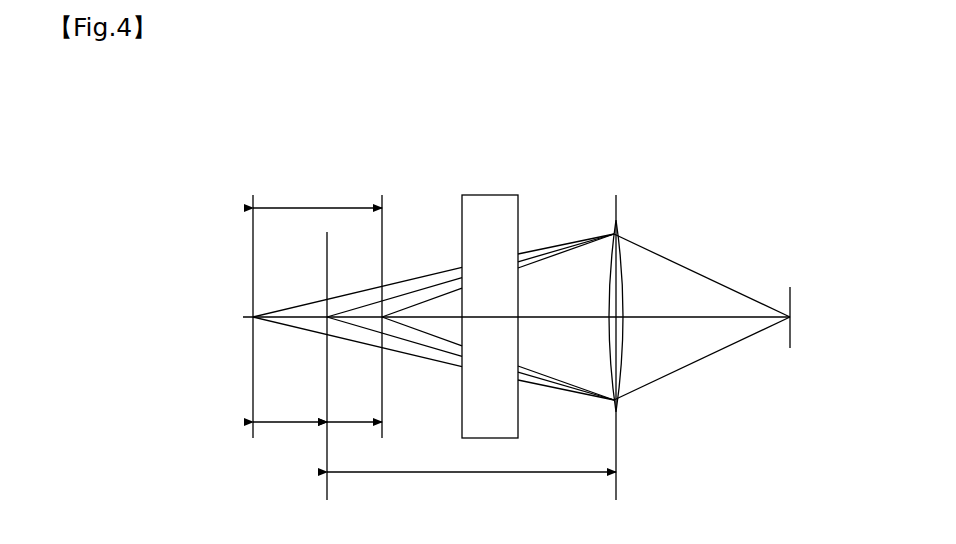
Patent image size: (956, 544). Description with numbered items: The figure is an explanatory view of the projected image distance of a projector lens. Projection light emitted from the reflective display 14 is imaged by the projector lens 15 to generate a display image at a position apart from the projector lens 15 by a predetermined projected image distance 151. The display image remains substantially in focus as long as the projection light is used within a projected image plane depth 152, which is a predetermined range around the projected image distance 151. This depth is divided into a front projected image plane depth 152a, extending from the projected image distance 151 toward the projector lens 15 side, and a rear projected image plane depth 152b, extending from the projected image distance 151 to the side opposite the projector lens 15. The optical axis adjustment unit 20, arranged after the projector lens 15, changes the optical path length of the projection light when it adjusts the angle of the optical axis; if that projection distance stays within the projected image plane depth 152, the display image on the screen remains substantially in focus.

The reflective display 14 is at (791, 287).
The projector lens 15 is at (619, 221).
The optical axis adjustment unit 20 is at (481, 195).
The projected image distance 151 is at (471, 367).
The projected image plane depth 152 is at (317, 308).
The front projected image plane depth 152a is at (353, 427).
The rear projected image plane depth 152b is at (291, 427).